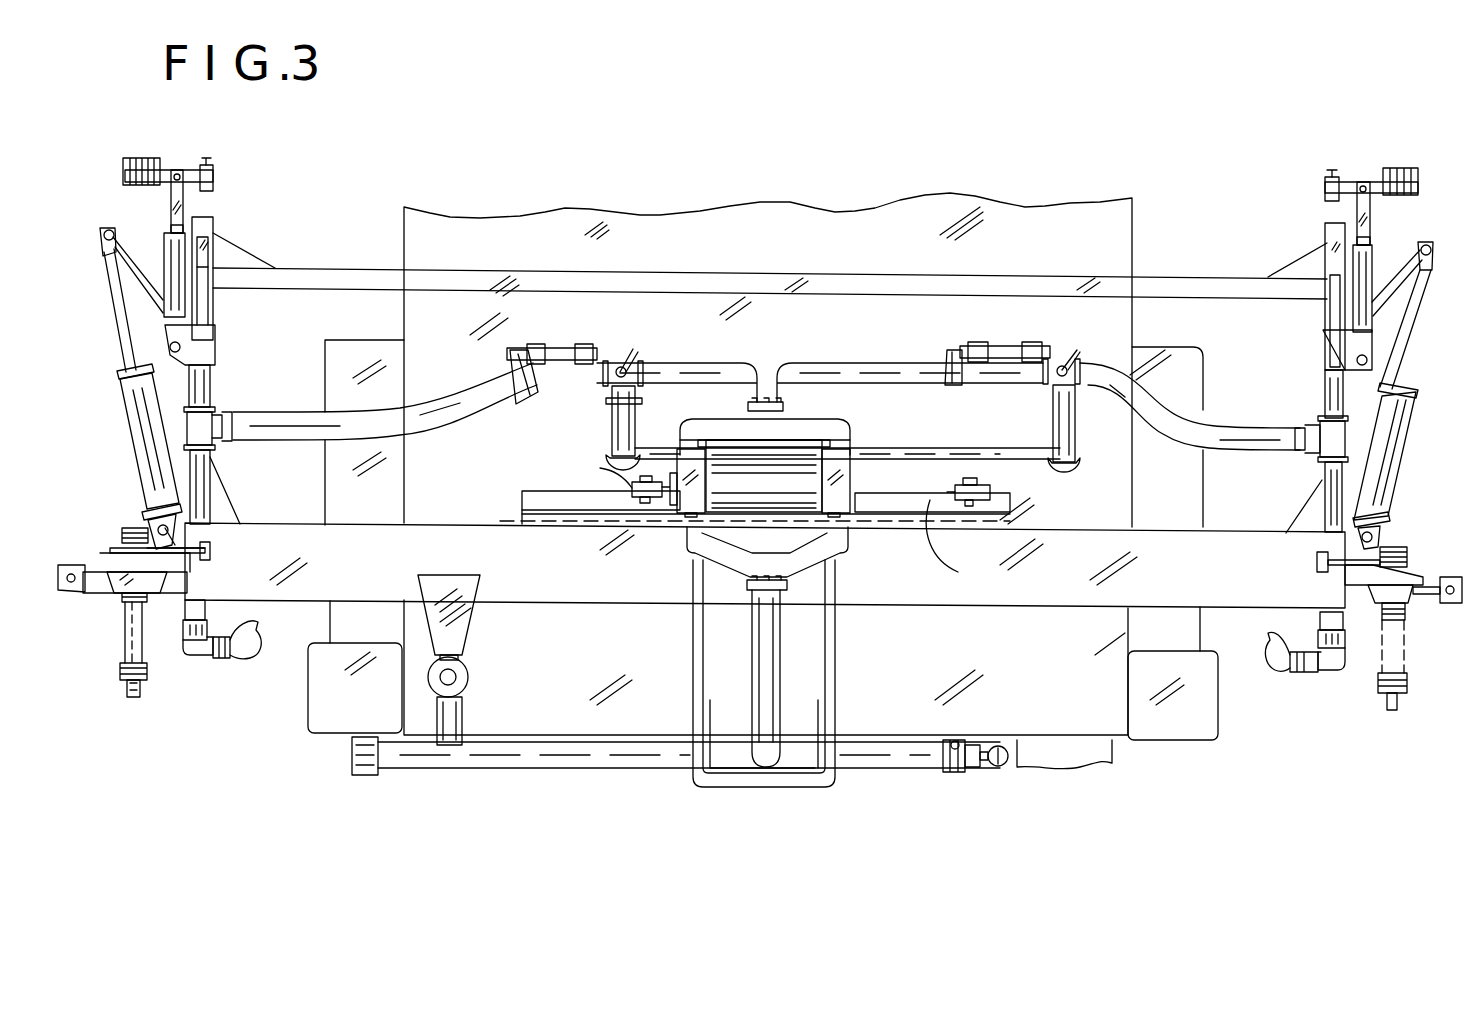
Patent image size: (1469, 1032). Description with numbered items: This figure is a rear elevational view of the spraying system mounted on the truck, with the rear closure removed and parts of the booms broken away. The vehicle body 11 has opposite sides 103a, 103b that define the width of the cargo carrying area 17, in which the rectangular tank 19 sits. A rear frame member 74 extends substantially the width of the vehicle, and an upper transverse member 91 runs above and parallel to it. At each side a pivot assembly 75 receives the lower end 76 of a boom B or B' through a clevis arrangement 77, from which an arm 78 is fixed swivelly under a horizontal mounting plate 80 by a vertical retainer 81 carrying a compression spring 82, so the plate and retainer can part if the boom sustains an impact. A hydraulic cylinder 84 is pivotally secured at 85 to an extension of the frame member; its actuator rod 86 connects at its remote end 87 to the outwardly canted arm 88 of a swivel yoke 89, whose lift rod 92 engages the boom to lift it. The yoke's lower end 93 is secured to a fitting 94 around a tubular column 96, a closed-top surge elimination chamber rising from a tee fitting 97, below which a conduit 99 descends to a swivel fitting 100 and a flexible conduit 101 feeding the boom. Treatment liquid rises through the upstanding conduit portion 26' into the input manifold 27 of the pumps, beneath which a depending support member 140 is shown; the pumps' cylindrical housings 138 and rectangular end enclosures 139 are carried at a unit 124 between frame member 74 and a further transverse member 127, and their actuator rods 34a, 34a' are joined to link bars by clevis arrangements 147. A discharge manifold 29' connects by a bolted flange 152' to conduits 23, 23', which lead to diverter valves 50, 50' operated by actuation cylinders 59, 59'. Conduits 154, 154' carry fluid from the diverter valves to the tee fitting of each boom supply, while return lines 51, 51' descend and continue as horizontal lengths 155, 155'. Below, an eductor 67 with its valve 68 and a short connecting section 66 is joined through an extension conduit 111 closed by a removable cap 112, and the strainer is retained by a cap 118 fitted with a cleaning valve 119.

The body 11 is at (1212, 741).
The cargo carrying area 17 is at (1152, 336).
The tank 19 is at (1152, 247).
The conduit 23 is at (677, 364).
The conduit 23' is at (910, 363).
The upstanding portion of conduit 26' is at (805, 728).
The input manifold 27 is at (806, 582).
The discharge manifold 29' is at (765, 427).
The actuator rod 34a is at (595, 469).
The actuator rod 34a' is at (971, 544).
The diverter valve 50 is at (645, 348).
The diverter valve 50' is at (1086, 355).
The return line 51 is at (596, 421).
The return line 51' is at (1088, 423).
The diverter valve actuation cylinder 59 is at (552, 358).
The diverter valve actuation cylinder 59' is at (997, 347).
The pipe 66 is at (463, 723).
The eductor 67 is at (523, 638).
The valve 68 is at (468, 678).
The rear frame member 74 is at (458, 525).
The pivot assembly 75 is at (111, 615).
The lower end of boom 76 is at (85, 575).
The clevis arrangement 77 is at (63, 588).
The arm 78 is at (102, 562).
The mounting plate 80 is at (167, 585).
The retainer 81 is at (122, 685).
The compression spring 82 is at (120, 668).
The hydraulic cylinder 84 is at (132, 435).
The pivotal securement 85 is at (172, 524).
The actuator rod 86 is at (124, 357).
The cylinder remote end 87 is at (103, 240).
The outwardly canted arm 88 is at (157, 222).
The swivel yoke 89 is at (178, 172).
The upper transverse member 91 is at (338, 267).
The lift rod 92 is at (215, 181).
The lower end of swivel yoke 93 is at (211, 376).
The fitting 94 is at (215, 346).
The tubular column 96 is at (218, 407).
The tee fitting 97 is at (213, 221).
The conduit 99 is at (212, 468).
The swivel fitting 100 is at (183, 640).
The flexible conduit 101 is at (234, 657).
The side 103a is at (328, 373).
The side 103b is at (1207, 366).
The extension conduit 111 is at (605, 773).
The cap 112 is at (363, 776).
The cap 118 is at (963, 774).
The valve 119 is at (1003, 766).
The pump assembly unit 124 is at (873, 453).
The transverse member 127 is at (523, 500).
The cylindrical housing 138 is at (820, 485).
The end enclosure 139 is at (697, 473).
The yoke 140 is at (738, 585).
The clevis and pin arrangement 147 is at (633, 498).
The bolted flange 152' is at (736, 403).
The conduit 154 is at (385, 389).
The conduit 154' is at (1190, 406).
The horizontal tubing length 155 is at (591, 445).
The horizontal tubing length 155' is at (1090, 482).
The boom B is at (108, 492).
The boom B' is at (1429, 535).